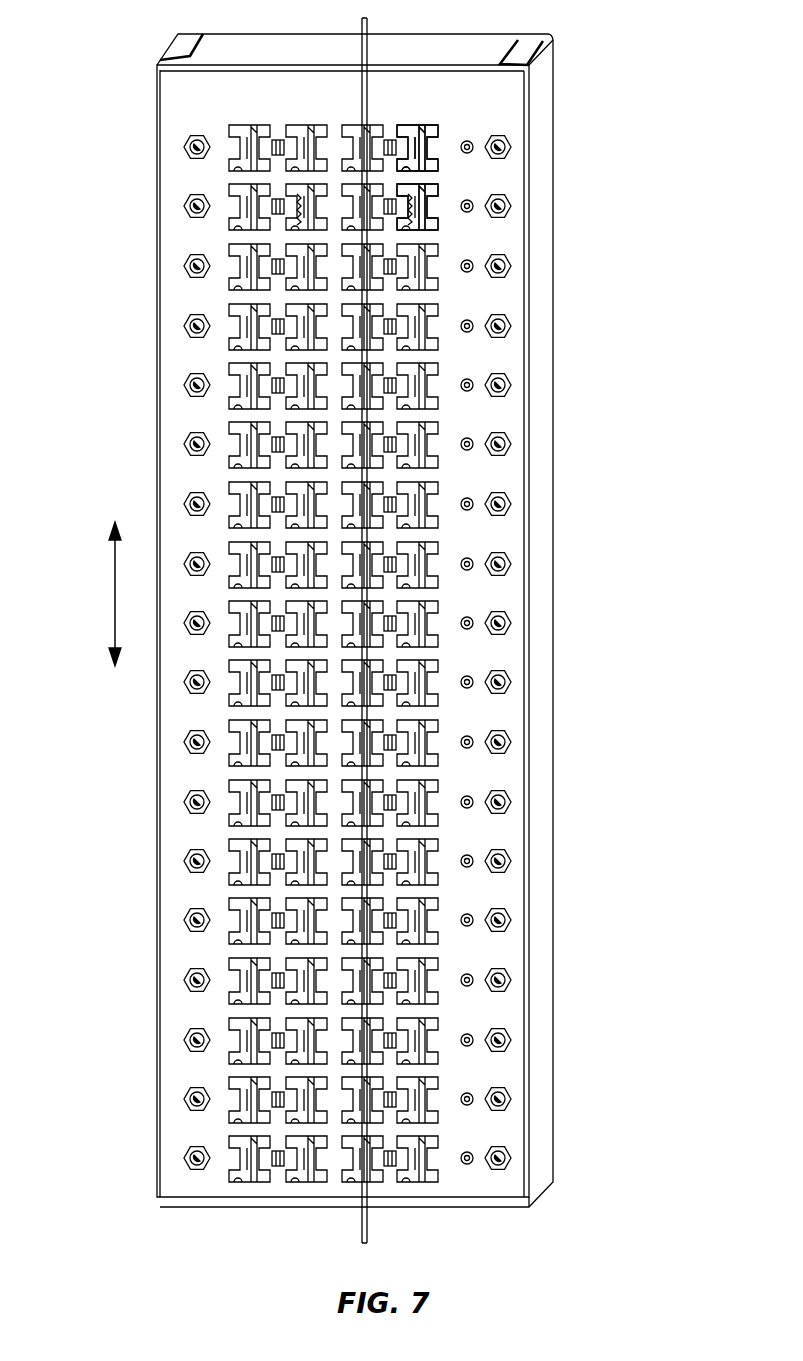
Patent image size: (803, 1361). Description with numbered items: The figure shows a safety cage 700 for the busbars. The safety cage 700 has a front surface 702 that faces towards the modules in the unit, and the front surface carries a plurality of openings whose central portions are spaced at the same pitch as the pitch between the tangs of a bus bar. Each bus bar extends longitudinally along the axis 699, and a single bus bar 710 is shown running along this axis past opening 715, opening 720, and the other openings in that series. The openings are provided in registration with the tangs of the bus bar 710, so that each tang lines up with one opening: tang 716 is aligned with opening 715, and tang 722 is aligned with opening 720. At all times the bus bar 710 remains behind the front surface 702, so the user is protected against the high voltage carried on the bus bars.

The safety cage 700 is at (178, 101).
The front surface 702 is at (513, 531).
The bus bar 710 is at (368, 32).
The opening 720 is at (427, 132).
The tang 722 is at (428, 157).
The tang 716 is at (425, 213).
The opening 715 is at (425, 216).
The axis 699 is at (113, 585).